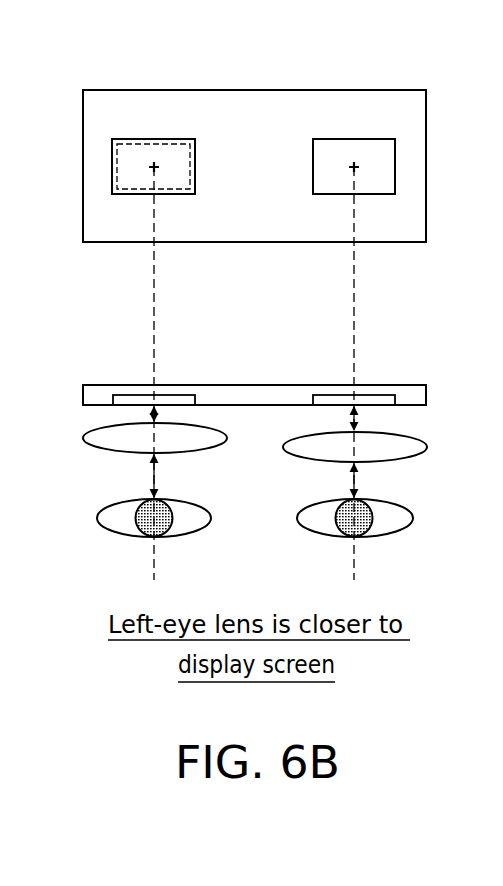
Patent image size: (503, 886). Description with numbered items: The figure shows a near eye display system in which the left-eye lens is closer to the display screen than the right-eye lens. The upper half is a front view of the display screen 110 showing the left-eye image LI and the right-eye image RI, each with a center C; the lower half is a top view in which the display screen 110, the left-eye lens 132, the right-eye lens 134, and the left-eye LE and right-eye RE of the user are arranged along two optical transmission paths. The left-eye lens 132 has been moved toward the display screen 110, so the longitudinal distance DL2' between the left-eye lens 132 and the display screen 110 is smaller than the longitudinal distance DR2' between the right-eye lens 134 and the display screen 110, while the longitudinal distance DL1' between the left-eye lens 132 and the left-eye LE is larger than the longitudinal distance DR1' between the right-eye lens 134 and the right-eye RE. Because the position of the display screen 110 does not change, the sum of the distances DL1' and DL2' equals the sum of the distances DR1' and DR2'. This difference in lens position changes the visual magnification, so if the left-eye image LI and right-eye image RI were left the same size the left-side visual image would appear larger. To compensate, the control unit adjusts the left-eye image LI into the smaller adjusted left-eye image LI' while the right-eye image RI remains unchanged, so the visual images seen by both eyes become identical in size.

The display screen 110 is at (103, 90).
The left-eye lens 132 is at (105, 432).
The right-eye lens 134 is at (415, 447).
The center C is at (152, 165).
The left-eye image LI is at (149, 274).
The adjusted left-eye image LI' is at (161, 216).
The right-eye image RI is at (331, 194).
The left-eye LE is at (115, 512).
The right-eye RE is at (400, 519).
The longitudinal distance DL1' is at (182, 476).
The longitudinal distance DL2' is at (217, 422).
The longitudinal distance DR1' is at (384, 480).
The longitudinal distance DR2' is at (419, 422).